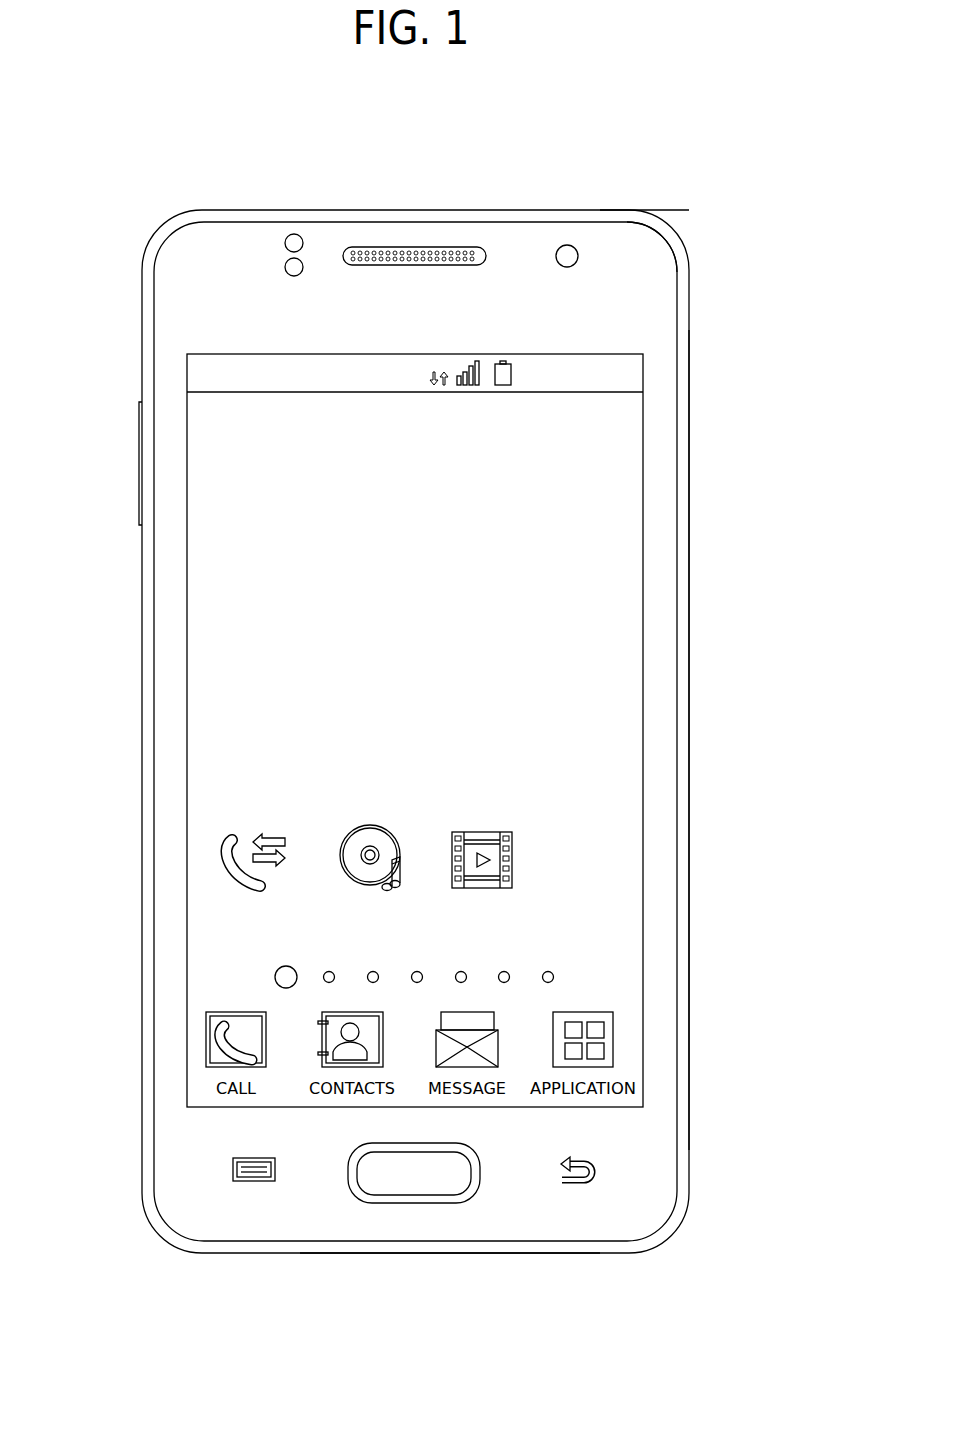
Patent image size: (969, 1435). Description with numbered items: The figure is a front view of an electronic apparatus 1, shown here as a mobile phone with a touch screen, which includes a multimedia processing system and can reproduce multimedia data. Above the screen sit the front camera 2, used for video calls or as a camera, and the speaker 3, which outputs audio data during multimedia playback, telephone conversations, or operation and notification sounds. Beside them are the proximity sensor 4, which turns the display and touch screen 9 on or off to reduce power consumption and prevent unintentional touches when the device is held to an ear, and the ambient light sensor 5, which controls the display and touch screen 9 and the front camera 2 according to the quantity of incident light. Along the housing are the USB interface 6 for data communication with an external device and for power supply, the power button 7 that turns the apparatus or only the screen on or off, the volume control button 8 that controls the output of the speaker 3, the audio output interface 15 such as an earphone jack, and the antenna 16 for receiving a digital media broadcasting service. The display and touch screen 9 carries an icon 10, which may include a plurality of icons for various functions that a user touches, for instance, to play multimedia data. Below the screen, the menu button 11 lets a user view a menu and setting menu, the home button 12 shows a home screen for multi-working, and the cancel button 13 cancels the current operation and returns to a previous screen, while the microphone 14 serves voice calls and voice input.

The electronic apparatus 1 is at (713, 108).
The front camera 2 is at (567, 248).
The speaker 3 is at (403, 248).
The proximity sensor 4 is at (292, 235).
The ambient light sensor 5 is at (286, 265).
The USB interface 6 is at (228, 209).
The power button 7 is at (689, 462).
The volume control button 8 is at (139, 459).
The display and touch screen 9 is at (541, 583).
The icon 10 is at (225, 868).
The menu button 11 is at (255, 1182).
The home button 12 is at (402, 1184).
The cancel button 13 is at (578, 1182).
The microphone 14 is at (537, 1253).
The audio output interface 15 is at (623, 208).
The antenna 16 is at (673, 227).